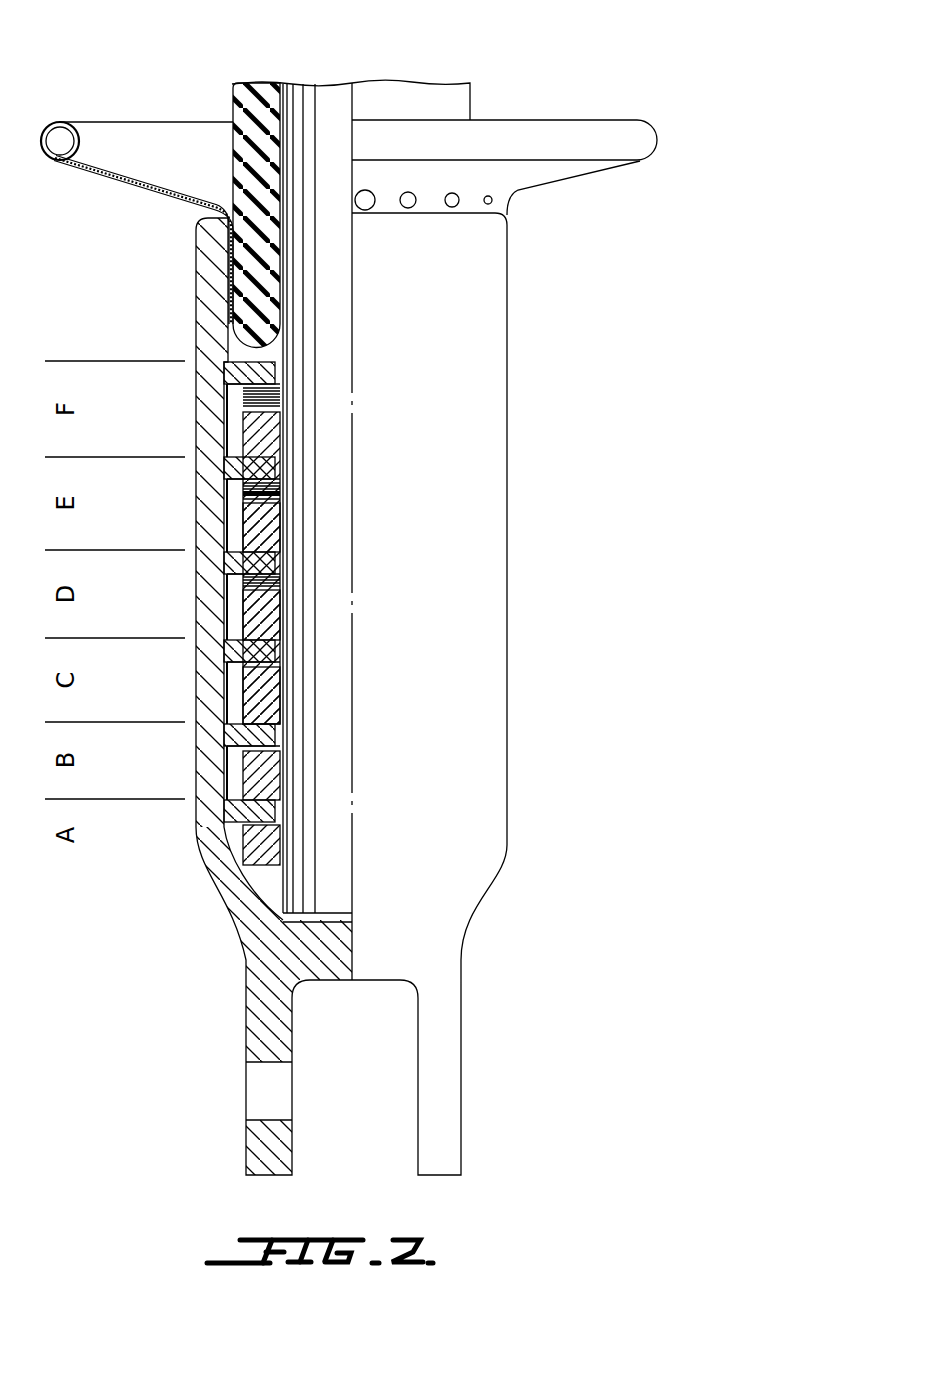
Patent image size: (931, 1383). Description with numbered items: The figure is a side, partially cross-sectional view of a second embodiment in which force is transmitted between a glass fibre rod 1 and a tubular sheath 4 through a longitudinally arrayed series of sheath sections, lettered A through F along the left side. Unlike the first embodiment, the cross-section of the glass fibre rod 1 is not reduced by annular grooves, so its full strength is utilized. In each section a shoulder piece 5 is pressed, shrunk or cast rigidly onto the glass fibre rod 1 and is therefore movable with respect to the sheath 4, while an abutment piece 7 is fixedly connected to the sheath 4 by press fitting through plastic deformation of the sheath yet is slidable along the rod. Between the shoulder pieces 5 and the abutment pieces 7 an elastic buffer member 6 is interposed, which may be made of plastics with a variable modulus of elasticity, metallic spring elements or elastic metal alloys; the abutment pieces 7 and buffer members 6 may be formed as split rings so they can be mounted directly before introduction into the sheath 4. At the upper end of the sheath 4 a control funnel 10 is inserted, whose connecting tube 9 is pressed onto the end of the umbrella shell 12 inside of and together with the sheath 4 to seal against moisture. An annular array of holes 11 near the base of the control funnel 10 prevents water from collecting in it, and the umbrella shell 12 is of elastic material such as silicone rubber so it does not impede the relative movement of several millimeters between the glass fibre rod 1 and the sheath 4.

The glass fibre rod 1 is at (296, 83).
The tubular sheath 4 is at (237, 888).
The shoulder piece 5 is at (255, 840).
The elastic buffer member 6 is at (280, 400).
The abutment piece 7 is at (280, 557).
The connecting tube 9 is at (200, 276).
The control funnel 10 is at (158, 147).
The holes 11 is at (373, 193).
The umbrella shell 12 is at (240, 110).